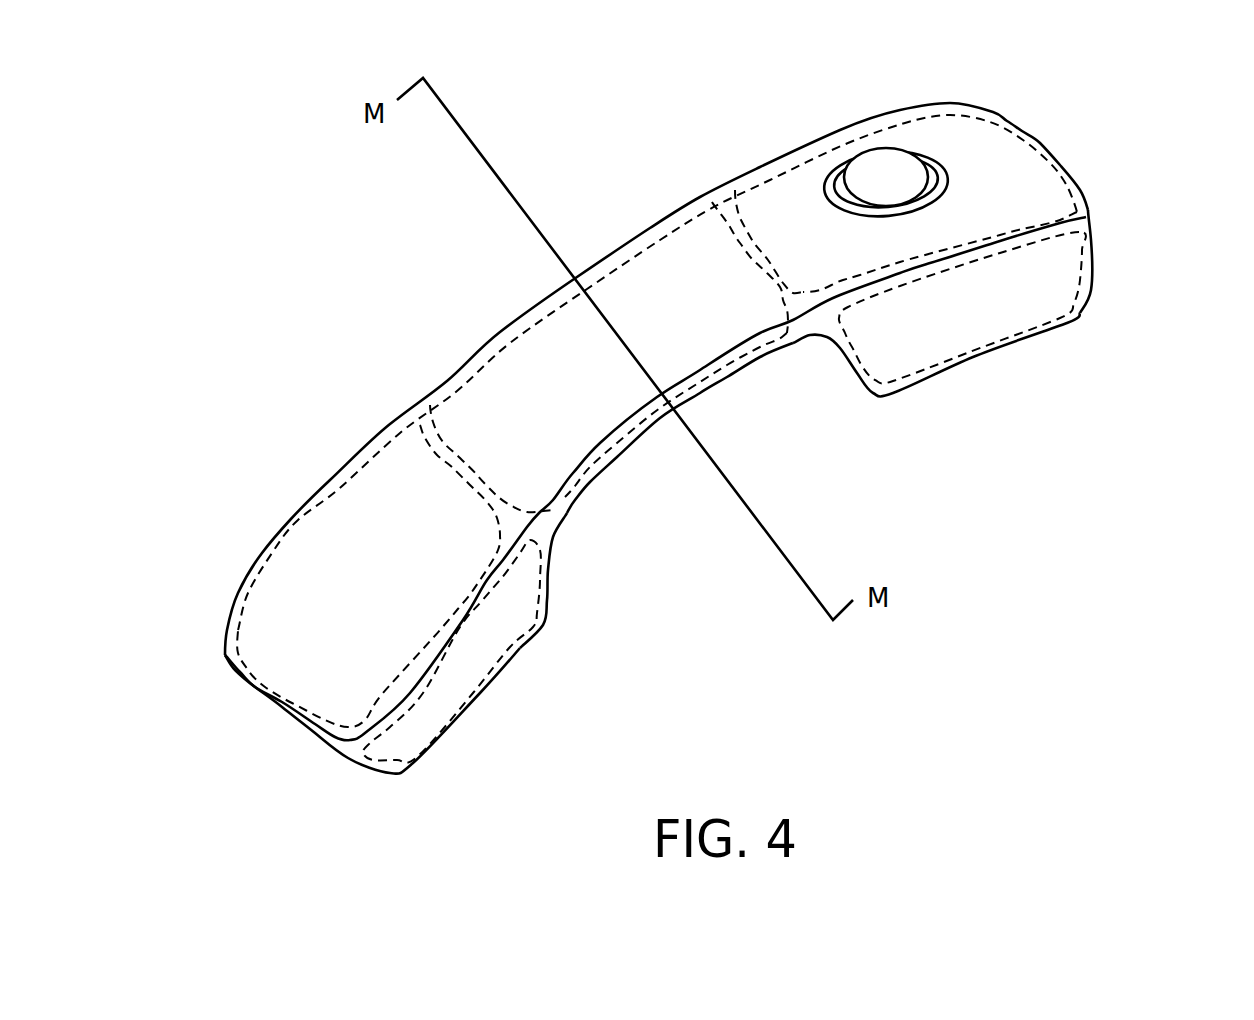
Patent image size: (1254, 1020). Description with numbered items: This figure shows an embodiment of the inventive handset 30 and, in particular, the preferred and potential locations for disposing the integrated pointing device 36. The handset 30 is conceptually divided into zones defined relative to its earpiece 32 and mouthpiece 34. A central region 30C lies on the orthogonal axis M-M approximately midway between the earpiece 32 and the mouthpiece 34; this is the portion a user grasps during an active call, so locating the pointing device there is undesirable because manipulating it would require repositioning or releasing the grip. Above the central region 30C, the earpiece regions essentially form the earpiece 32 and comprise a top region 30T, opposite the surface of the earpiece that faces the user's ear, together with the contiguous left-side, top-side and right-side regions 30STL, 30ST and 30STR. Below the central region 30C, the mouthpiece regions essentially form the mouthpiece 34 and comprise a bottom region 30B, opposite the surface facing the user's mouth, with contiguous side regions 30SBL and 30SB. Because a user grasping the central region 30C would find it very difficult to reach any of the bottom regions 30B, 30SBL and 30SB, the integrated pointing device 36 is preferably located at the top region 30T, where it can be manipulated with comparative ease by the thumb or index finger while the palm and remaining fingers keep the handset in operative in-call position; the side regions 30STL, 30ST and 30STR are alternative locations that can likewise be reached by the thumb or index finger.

The handset 30 is at (1093, 253).
The left-side region 30STL is at (873, 98).
The top-side region 30ST is at (1103, 190).
The right-side region 30STR is at (910, 333).
The top region 30T is at (1027, 203).
The central region 30C is at (700, 325).
The bottom region 30B is at (383, 610).
The left-side region 30SBL is at (543, 668).
The top-side region 30SB is at (367, 713).
The earpiece 32 is at (1008, 372).
The mouthpiece 34 is at (499, 713).
The integrated pointing device 36 is at (885, 165).